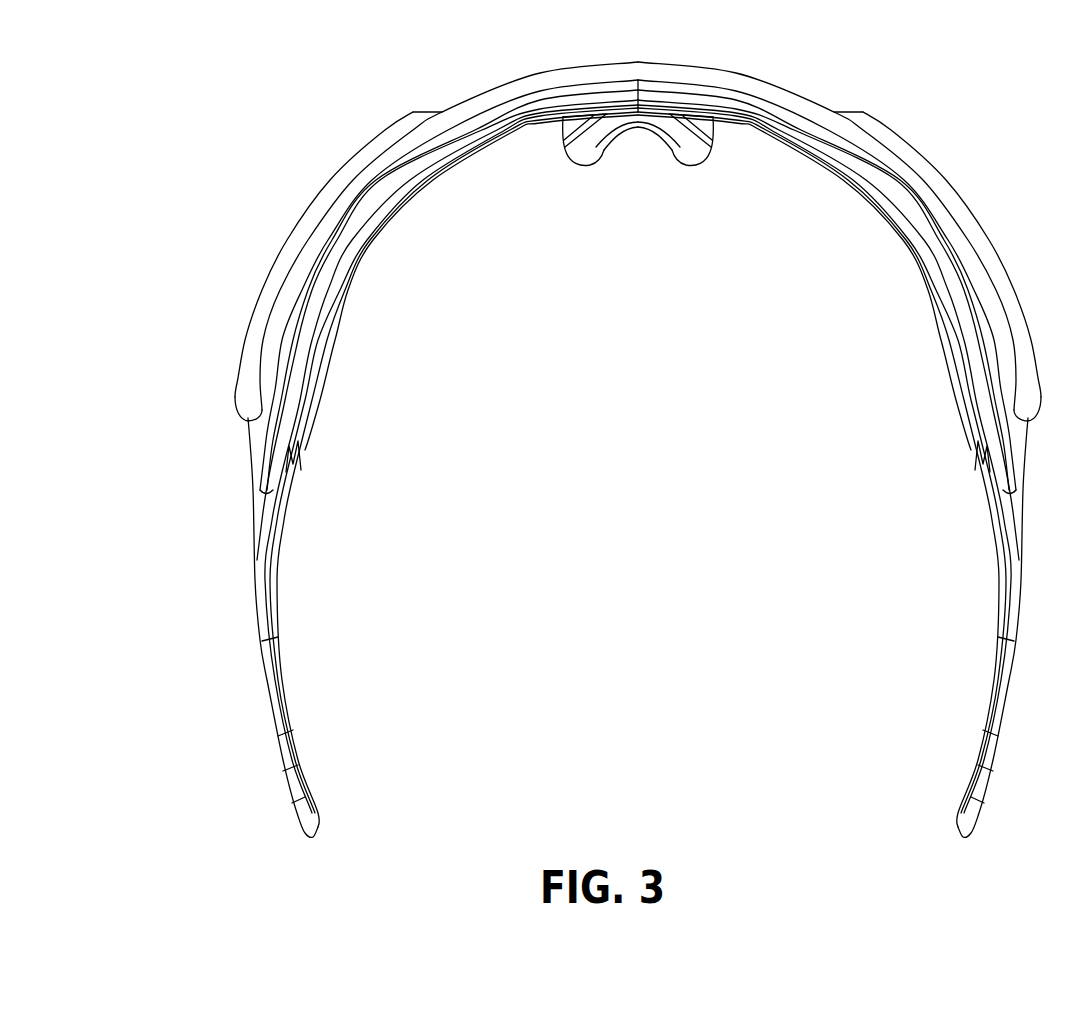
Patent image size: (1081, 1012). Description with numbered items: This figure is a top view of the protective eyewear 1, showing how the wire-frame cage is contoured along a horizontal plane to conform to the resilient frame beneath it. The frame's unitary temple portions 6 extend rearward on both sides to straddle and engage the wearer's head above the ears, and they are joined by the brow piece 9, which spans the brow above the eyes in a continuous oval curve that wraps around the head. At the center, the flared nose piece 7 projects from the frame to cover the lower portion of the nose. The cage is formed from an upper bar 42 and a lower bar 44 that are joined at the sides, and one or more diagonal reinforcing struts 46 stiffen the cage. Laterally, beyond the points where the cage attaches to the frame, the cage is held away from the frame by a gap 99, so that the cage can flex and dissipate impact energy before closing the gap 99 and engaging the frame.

The protective eyewear 1 is at (220, 160).
The temple portions 6 is at (268, 686).
The nose piece 7 is at (585, 146).
The brow piece 9 is at (444, 142).
The upper bar 42 is at (778, 90).
The lower bar 44 is at (632, 65).
The diagonal reinforcing struts 46 is at (915, 152).
The gap 99 is at (298, 298).